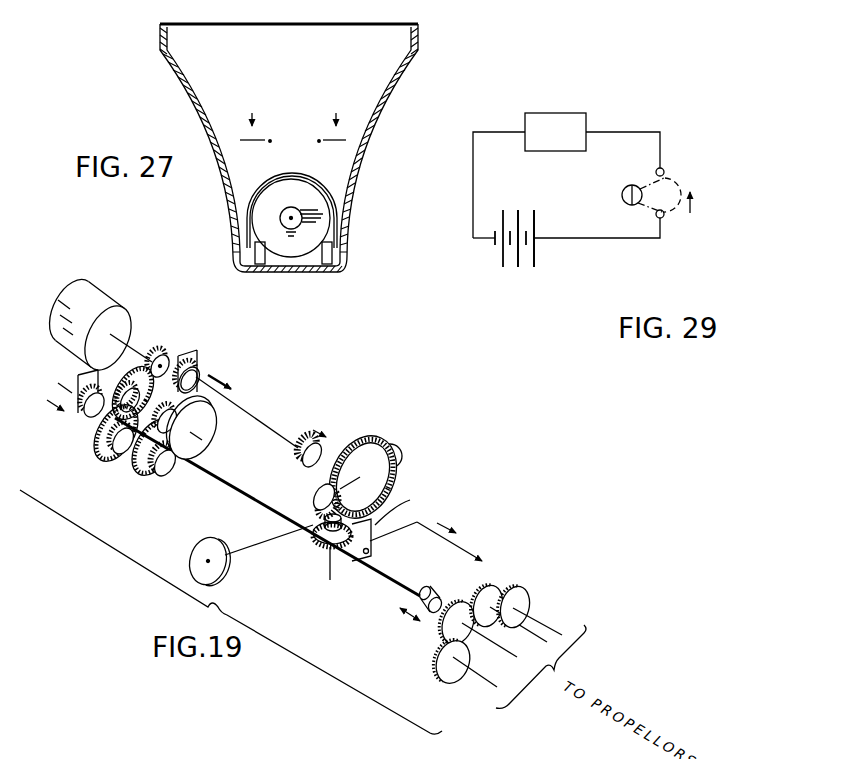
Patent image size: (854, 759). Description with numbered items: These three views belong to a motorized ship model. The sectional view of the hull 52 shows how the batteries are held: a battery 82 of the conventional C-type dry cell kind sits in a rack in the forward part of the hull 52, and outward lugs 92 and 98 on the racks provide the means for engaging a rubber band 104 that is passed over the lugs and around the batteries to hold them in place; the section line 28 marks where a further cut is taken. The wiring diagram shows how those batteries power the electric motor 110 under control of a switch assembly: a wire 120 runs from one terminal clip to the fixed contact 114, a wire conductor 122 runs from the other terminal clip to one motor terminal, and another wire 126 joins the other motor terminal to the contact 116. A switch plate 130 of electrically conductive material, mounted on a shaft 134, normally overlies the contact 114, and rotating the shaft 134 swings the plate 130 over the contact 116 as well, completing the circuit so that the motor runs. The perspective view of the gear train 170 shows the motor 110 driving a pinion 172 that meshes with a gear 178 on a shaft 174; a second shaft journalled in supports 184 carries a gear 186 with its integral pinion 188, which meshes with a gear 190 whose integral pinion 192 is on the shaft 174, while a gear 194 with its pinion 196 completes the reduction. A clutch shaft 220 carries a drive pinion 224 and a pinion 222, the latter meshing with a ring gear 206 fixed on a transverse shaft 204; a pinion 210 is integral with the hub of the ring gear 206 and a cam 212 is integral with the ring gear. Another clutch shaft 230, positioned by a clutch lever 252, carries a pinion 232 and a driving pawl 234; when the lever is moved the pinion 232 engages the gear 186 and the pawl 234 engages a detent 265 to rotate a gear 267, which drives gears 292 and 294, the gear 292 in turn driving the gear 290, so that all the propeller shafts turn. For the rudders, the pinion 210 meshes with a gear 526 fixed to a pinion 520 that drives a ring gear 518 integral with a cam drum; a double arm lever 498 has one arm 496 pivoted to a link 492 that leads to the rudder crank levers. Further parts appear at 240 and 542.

In FIG. 27, the hull 52 is at (363, 166).
In FIG. 27, the section line 28 is at (292, 118).
In FIG. 27, the rubber band 104 is at (300, 162).
In FIG. 27, the outward lug 92 is at (248, 245).
In FIG. 27, the outward lug 98 is at (343, 247).
In FIG. 29, the wire conductor 122 is at (473, 187).
In FIG. 29, the electric motor 110 is at (566, 143).
In FIG. 19, the electric motor 110 is at (98, 297).
In FIG. 29, the wire 126 is at (637, 128).
In FIG. 29, the contact 116 is at (665, 169).
In FIG. 29, the fixed contact 114 is at (665, 218).
In FIG. 29, the wire 120 is at (643, 240).
In FIG. 29, the shaft 134 is at (622, 196).
In FIG. 29, the switch plate 130 is at (690, 178).
In FIG. 29, the battery 82 is at (500, 253).
In FIG. 19, the gear train 170 is at (240, 319).
In FIG. 19, the pinion 172 is at (158, 350).
In FIG. 19, the gear 178 is at (133, 367).
In FIG. 19, the supports 184 is at (125, 377).
In FIG. 19, the gear 186 is at (108, 461).
In FIG. 19, the pinion 188 is at (128, 470).
In FIG. 19, the gear 190 is at (183, 362).
In FIG. 19, the pinion 192 is at (224, 396).
In FIG. 19, the gear 194 is at (148, 483).
In FIG. 19, the pinion 196 is at (172, 483).
In FIG. 19, the shaft 174 is at (204, 441).
In FIG. 19, the drive pinion 224 is at (198, 376).
In FIG. 19, the bracket 240 is at (189, 351).
In FIG. 19, the clutch lever 252 is at (76, 374).
In FIG. 19, the pinion 232 is at (84, 420).
In FIG. 19, the clutch shaft 230 is at (229, 482).
In FIG. 19, the clutch shaft 220 is at (270, 429).
In FIG. 19, the pinion 222 is at (310, 431).
In FIG. 19, the ring gear 206 is at (360, 436).
In FIG. 19, the cam 212 is at (399, 449).
In FIG. 19, the pinion 210 is at (318, 483).
In FIG. 19, the worm gear assembly 542 is at (313, 530).
In FIG. 19, the shaft 204 is at (262, 536).
In FIG. 19, the ring gear 518 is at (329, 552).
In FIG. 19, the pinion 520 is at (356, 562).
In FIG. 19, the double arm lever 498 is at (368, 552).
In FIG. 19, the arm 496 is at (387, 537).
In FIG. 19, the gear 526 is at (410, 500).
In FIG. 19, the link 492 is at (464, 539).
In FIG. 19, the driving pawl 234 is at (440, 580).
In FIG. 19, the detent 265 is at (415, 630).
In FIG. 19, the gear 267 is at (470, 638).
In FIG. 19, the gear 292 is at (489, 588).
In FIG. 19, the gear 290 is at (529, 603).
In FIG. 19, the gear 294 is at (442, 674).